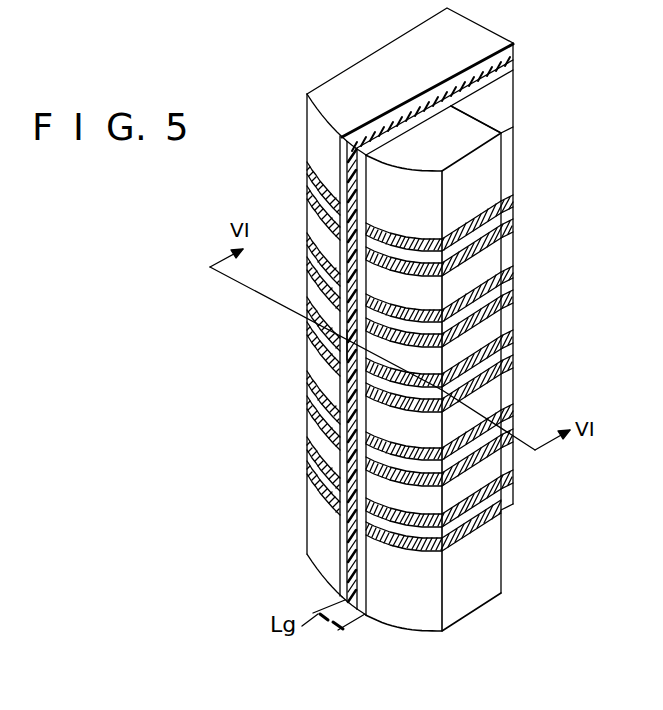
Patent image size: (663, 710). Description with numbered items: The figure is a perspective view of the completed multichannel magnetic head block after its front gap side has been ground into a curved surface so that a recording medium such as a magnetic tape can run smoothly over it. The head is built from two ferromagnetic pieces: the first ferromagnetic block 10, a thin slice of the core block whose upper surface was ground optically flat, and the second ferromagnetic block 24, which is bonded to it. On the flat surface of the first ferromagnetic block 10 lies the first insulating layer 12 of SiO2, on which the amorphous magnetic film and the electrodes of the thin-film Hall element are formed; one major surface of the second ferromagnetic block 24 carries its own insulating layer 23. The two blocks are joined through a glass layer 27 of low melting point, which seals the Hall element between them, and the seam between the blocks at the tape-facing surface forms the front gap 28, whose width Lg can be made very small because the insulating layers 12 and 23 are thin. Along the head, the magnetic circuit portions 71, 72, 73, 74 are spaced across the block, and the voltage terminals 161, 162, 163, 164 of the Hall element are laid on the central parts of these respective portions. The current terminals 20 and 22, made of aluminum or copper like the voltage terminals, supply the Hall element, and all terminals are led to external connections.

The first ferromagnetic block 10 is at (358, 70).
The first insulating layer 12 is at (498, 46).
The current terminal 20 is at (505, 80).
The current terminal 22 is at (512, 470).
The insulating layer 23 is at (410, 125).
The second ferromagnetic block 24 is at (483, 130).
The glass layer 27 is at (410, 110).
The front gap 28 is at (345, 344).
The voltage terminal 161 is at (512, 170).
The voltage terminal 162 is at (512, 238).
The voltage terminal 163 is at (512, 307).
The voltage terminal 164 is at (512, 377).
The magnetic circuit portion 71 is at (537, 258).
The magnetic circuit portion 72 is at (535, 328).
The magnetic circuit portion 73 is at (535, 399).
The magnetic circuit portion 74 is at (533, 503).